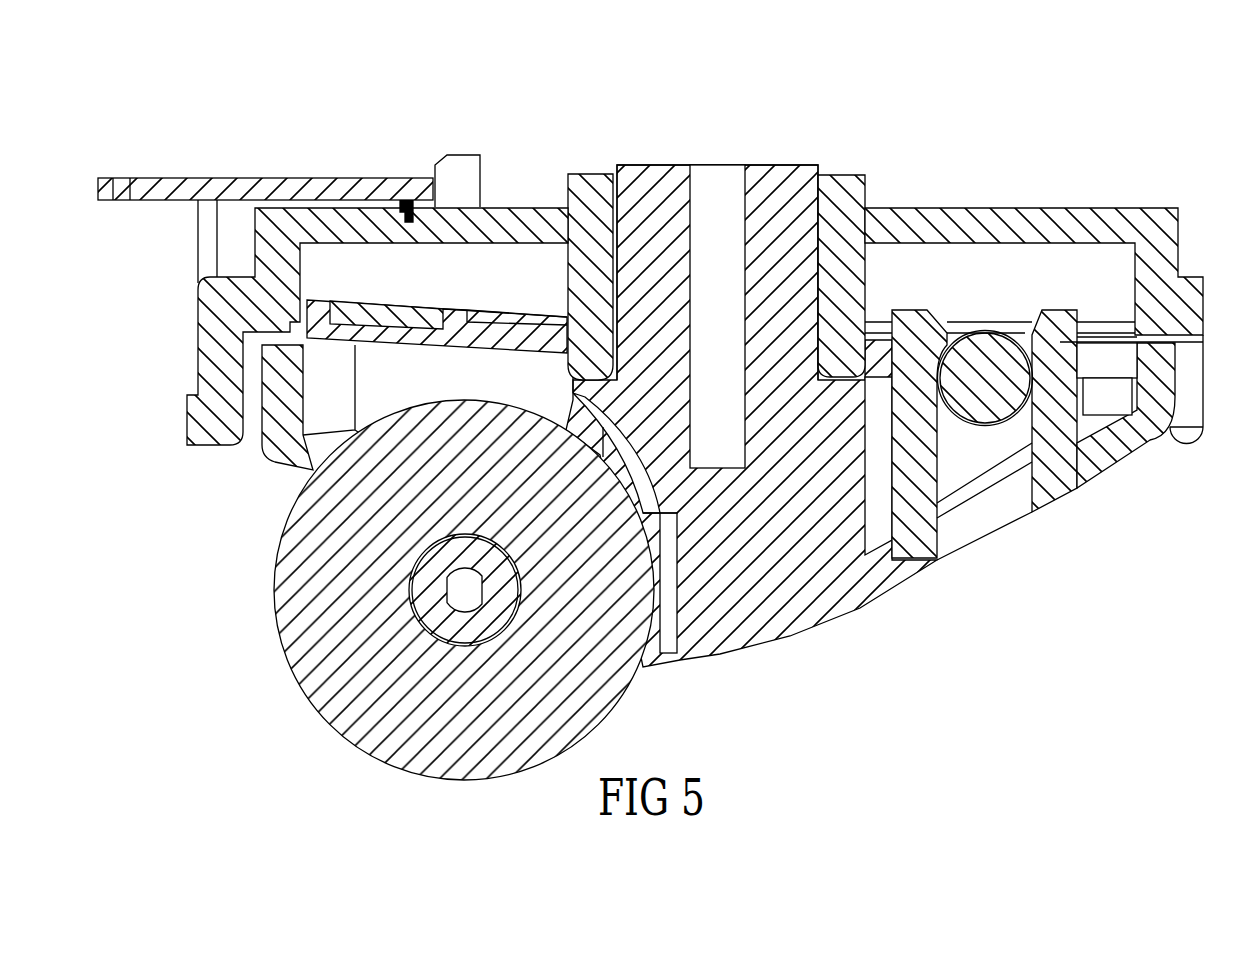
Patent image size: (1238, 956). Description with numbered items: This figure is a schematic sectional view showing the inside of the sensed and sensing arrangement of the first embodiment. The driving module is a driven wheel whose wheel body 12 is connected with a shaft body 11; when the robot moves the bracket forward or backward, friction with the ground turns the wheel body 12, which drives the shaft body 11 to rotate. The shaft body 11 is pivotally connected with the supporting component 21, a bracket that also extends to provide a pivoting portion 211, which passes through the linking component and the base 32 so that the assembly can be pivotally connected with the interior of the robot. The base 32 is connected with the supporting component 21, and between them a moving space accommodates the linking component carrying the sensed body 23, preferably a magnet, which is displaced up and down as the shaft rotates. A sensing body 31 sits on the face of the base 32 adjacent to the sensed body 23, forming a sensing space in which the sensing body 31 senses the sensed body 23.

The shaft body 11 is at (437, 617).
The wheel body 12 is at (272, 605).
The supporting component 21 is at (995, 540).
The pivoting portion 211 is at (795, 190).
The sensed body 23 is at (380, 290).
The sensing body 31 is at (225, 178).
The base 32 is at (1080, 207).